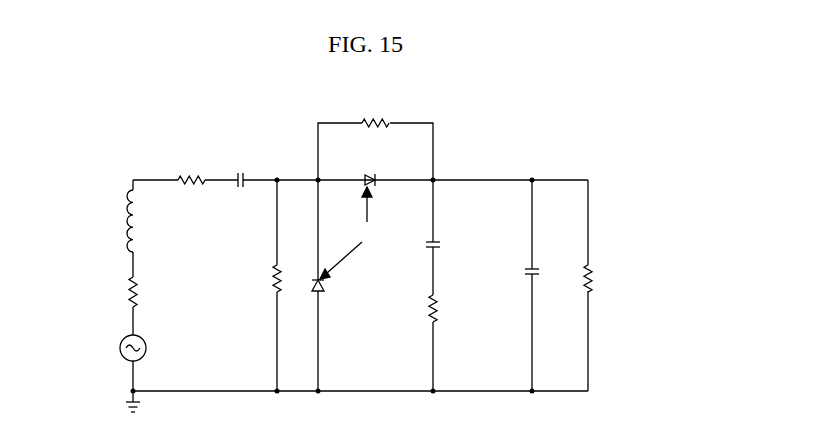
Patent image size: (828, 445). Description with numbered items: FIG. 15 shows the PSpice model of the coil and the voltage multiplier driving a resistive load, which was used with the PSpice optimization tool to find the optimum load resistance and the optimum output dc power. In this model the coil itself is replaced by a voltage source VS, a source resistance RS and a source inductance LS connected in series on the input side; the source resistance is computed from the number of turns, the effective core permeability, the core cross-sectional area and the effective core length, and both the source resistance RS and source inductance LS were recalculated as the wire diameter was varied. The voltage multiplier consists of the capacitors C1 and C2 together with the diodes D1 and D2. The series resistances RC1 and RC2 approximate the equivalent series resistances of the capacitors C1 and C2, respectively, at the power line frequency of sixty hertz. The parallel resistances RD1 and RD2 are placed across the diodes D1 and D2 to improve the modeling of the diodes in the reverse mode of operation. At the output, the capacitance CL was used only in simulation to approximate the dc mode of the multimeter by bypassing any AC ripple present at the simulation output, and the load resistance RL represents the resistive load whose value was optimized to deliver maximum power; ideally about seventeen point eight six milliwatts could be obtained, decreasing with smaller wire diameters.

The series resistance RC1 is at (191, 181).
The capacitor C1 is at (245, 181).
The source inductance LS is at (163, 224).
The source resistance RS is at (166, 292).
The voltage source VS is at (184, 358).
The parallel resistance RD2 is at (259, 285).
The diode D2 is at (337, 285).
The parallel resistance RD1 is at (375, 138).
The diode D1 is at (374, 191).
The capacitor C2 is at (447, 237).
The series resistance RC2 is at (438, 343).
The capacitance CL is at (535, 285).
The load resistance RL is at (598, 285).